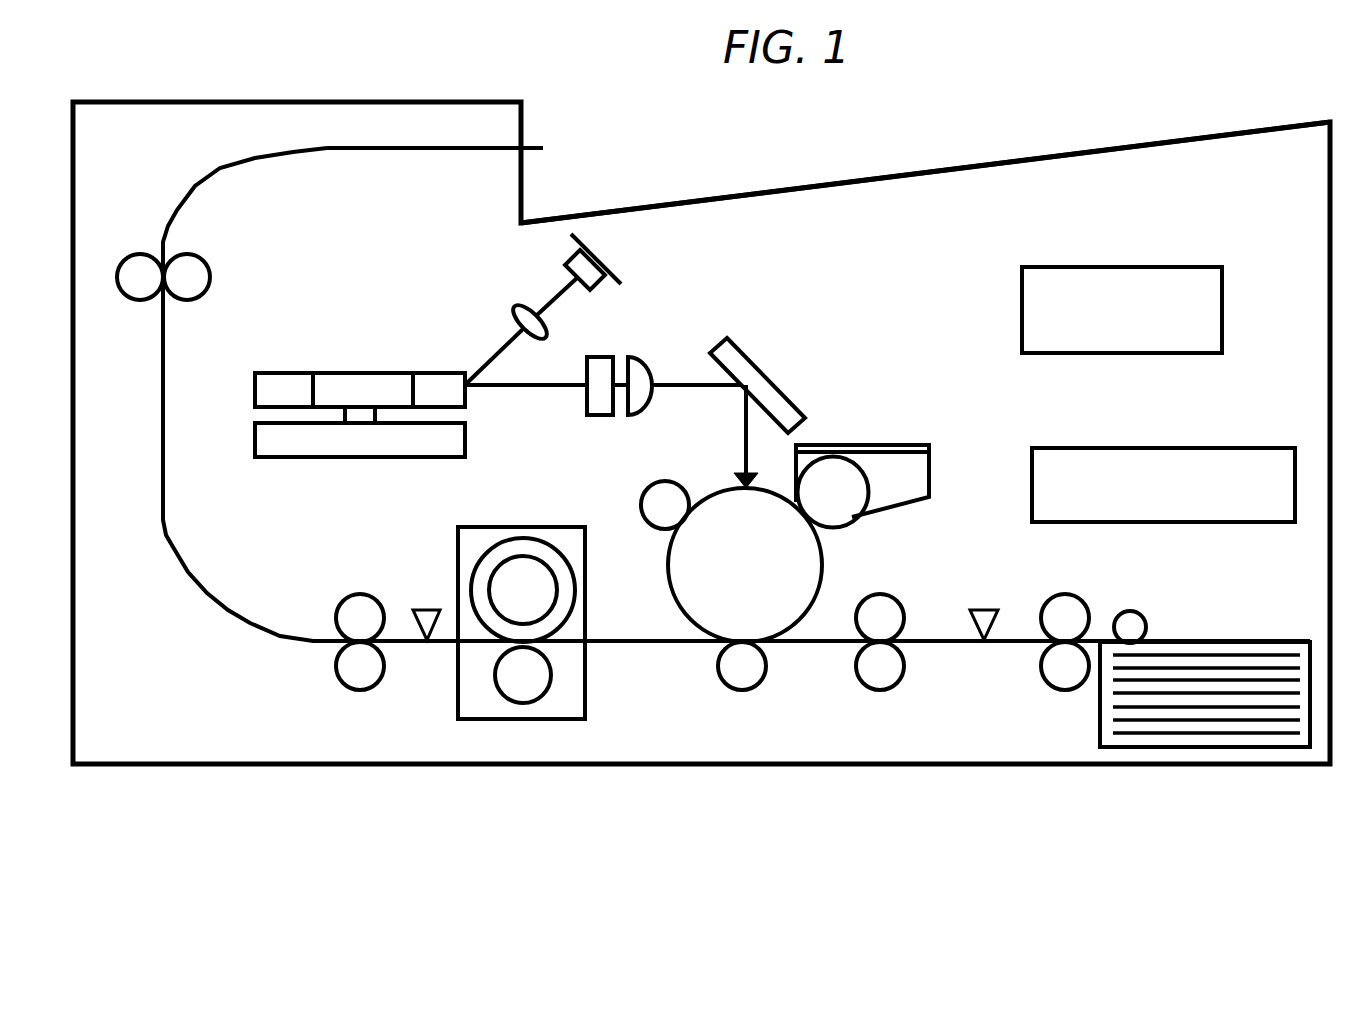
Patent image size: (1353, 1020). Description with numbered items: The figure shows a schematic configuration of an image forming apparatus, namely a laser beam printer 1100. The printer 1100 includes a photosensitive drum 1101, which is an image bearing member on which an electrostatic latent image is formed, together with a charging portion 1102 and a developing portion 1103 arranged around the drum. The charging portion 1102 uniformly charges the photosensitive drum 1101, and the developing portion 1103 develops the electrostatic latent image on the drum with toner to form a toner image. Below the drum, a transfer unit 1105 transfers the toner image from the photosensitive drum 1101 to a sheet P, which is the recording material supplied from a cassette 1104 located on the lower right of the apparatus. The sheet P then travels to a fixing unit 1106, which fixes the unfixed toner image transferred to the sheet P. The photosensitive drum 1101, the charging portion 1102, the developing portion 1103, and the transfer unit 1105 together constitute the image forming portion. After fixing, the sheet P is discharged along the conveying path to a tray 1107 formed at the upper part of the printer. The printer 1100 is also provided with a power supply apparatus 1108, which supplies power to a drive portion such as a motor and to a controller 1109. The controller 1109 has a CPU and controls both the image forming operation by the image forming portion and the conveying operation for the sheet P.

The laser beam printer 1100 is at (703, 764).
The photosensitive drum 1101 is at (668, 565).
The charging portion 1102 is at (648, 488).
The developing portion 1103 is at (930, 455).
The cassette 1104 is at (1265, 623).
The transfer unit 1105 is at (728, 687).
The fixing unit 1106 is at (458, 695).
The tray 1107 is at (722, 196).
The power supply apparatus 1108 is at (1190, 448).
The controller 1109 is at (1225, 302).
The sheet P is at (1115, 680).